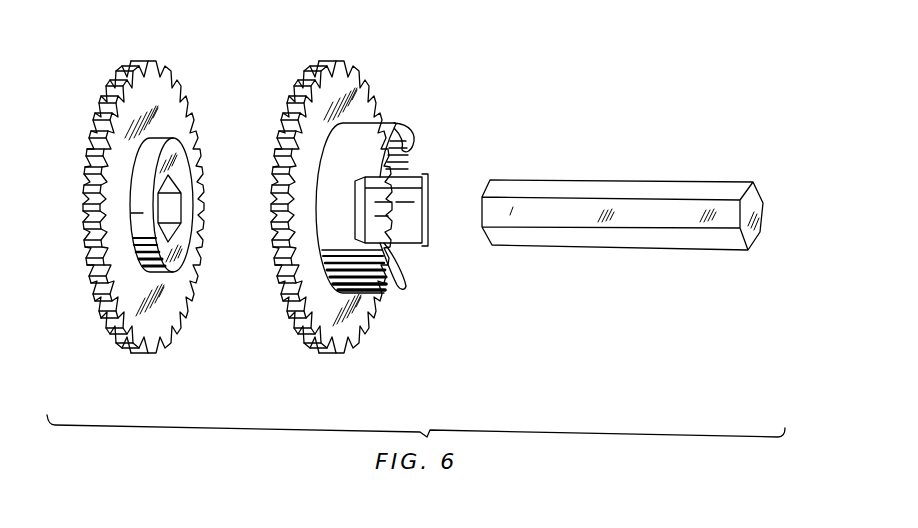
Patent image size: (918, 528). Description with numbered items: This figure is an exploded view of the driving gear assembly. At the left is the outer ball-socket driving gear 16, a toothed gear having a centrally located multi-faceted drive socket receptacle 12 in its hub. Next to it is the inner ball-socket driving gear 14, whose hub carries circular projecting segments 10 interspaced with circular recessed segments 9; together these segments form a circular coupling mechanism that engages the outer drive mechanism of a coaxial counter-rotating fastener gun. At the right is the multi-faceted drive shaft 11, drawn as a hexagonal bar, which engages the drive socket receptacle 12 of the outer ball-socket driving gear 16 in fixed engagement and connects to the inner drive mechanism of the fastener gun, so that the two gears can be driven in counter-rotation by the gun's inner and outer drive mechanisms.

The outer ball-socket driving gear 16 is at (141, 60).
The inner ball-socket driving gear 14 is at (346, 60).
The multi-faceted drive socket receptacle 12 is at (172, 209).
The circular projecting segments 10 is at (404, 130).
The circular recessed segments 9 is at (405, 163).
The multi-faceted drive shaft 11 is at (620, 190).